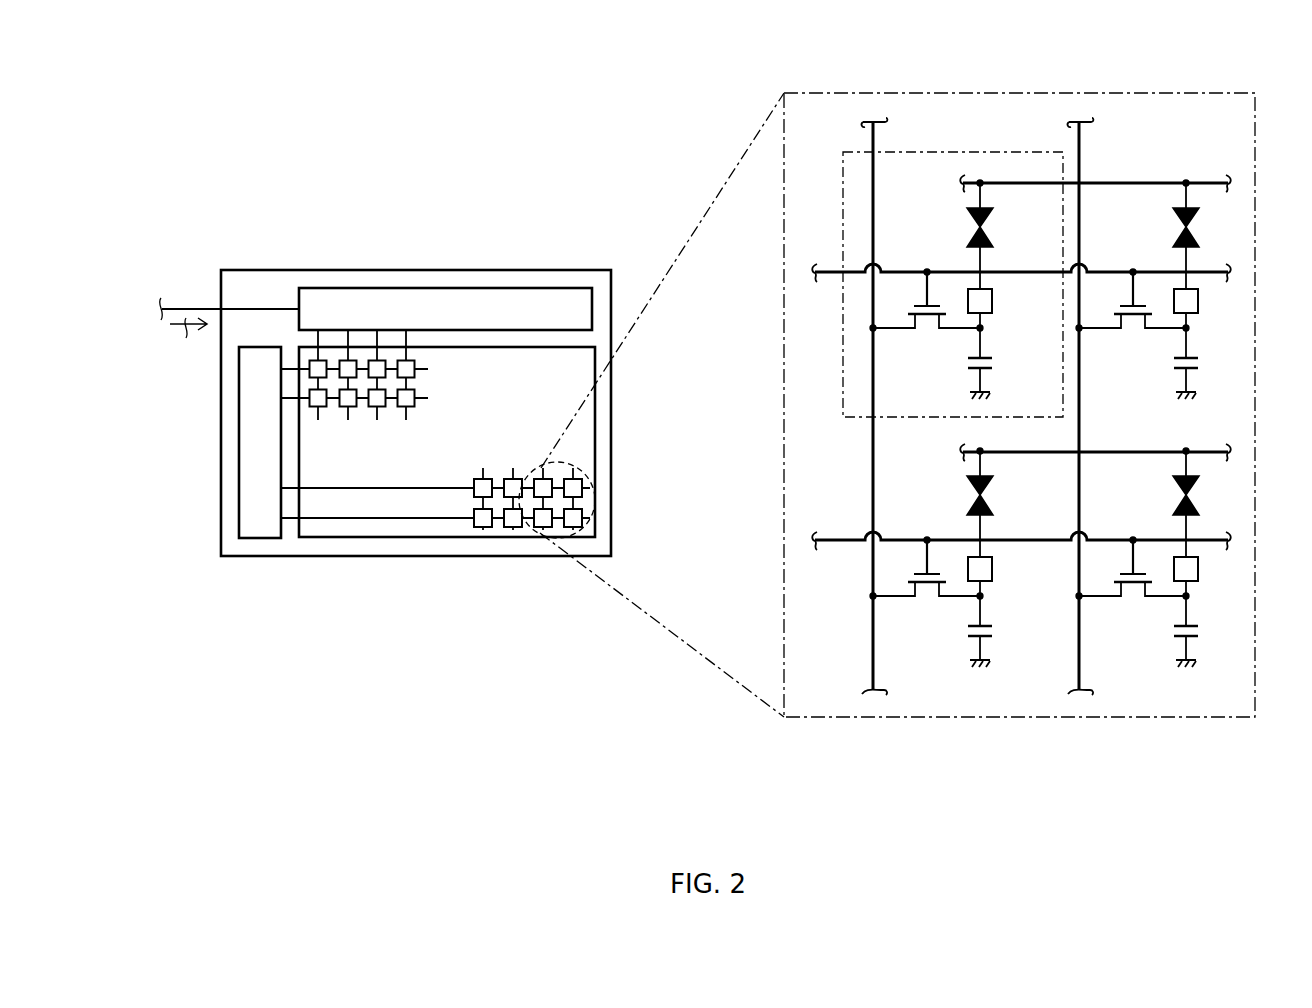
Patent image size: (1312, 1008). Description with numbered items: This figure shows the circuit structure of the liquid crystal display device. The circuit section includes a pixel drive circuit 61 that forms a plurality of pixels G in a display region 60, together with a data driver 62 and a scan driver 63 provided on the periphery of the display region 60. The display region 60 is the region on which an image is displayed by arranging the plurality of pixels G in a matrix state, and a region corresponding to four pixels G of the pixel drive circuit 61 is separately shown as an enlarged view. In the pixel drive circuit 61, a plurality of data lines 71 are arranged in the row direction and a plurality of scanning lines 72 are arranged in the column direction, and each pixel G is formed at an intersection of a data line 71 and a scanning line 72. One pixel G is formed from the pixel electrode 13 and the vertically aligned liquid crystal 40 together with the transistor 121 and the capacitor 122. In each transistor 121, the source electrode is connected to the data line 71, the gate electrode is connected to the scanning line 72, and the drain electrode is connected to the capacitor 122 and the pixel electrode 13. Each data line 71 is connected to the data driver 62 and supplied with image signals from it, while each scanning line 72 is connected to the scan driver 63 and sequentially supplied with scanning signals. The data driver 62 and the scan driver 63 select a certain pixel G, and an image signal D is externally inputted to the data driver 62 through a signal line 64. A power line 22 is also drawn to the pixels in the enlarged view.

The pixel electrode 13 is at (482, 527).
The power supply line 22 is at (1120, 180).
The vertically aligned liquid crystal 40 is at (963, 232).
The display region 60 is at (393, 538).
The pixel drive circuit 61 is at (1153, 92).
The data driver 62 is at (547, 288).
The scan driver 63 is at (260, 540).
The signal line 64 is at (193, 307).
The data line 71 is at (870, 138).
The scanning line 72 is at (818, 283).
The transistor 121 is at (922, 322).
The capacitor 122 is at (992, 368).
The pixel G is at (977, 150).
The image signal D is at (188, 351).